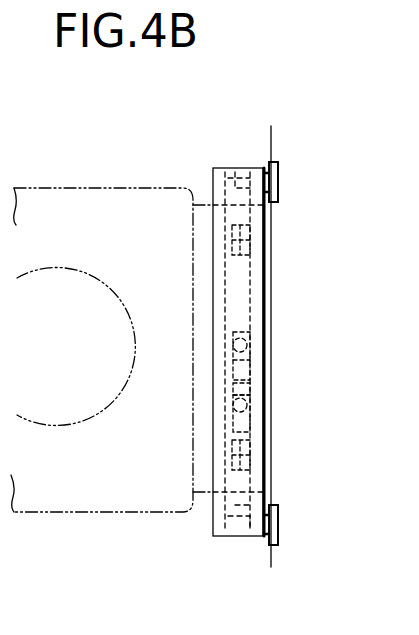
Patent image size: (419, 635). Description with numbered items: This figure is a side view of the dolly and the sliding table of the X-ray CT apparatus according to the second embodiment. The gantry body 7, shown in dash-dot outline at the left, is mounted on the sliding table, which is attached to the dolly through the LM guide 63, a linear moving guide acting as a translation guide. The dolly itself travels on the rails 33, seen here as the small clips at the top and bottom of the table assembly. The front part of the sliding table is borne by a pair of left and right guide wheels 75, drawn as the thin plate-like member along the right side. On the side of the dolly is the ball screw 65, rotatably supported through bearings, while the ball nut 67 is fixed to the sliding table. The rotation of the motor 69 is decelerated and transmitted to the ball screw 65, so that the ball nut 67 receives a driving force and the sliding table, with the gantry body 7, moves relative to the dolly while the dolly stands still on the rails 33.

The gantry body 7 is at (103, 188).
The rails 33 is at (280, 168).
The LM guide 63 is at (263, 243).
The ball screw 65 is at (250, 348).
The ball nut 67 is at (250, 388).
The motor 69 is at (255, 410).
The guide wheels 75 is at (266, 168).